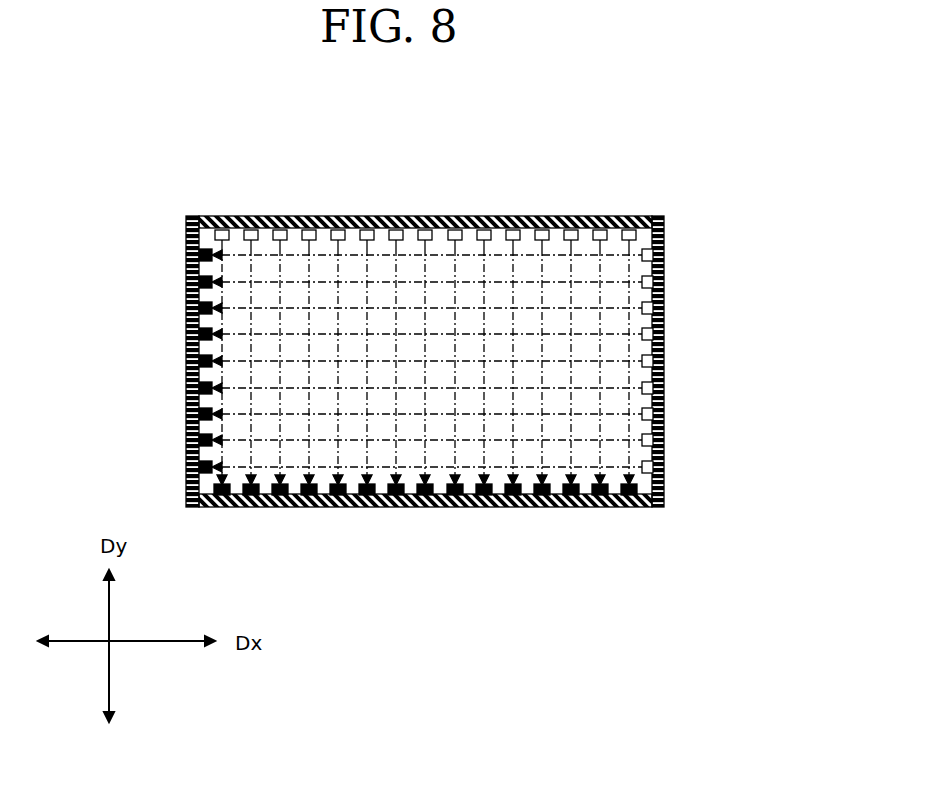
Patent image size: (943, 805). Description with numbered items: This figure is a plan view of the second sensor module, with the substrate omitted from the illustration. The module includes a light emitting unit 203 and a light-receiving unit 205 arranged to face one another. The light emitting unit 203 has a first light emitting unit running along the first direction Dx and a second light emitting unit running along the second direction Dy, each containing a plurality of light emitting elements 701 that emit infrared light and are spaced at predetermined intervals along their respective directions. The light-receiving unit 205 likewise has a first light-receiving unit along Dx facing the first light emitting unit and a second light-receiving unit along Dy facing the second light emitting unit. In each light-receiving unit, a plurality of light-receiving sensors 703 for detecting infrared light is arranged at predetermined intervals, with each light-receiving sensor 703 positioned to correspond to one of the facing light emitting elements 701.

The light emitting element 701 is at (337, 222).
The light-receiving sensor 703 is at (186, 272).
The light emitting unit 203 is at (425, 217).
The light-receiving unit 205 is at (186, 357).